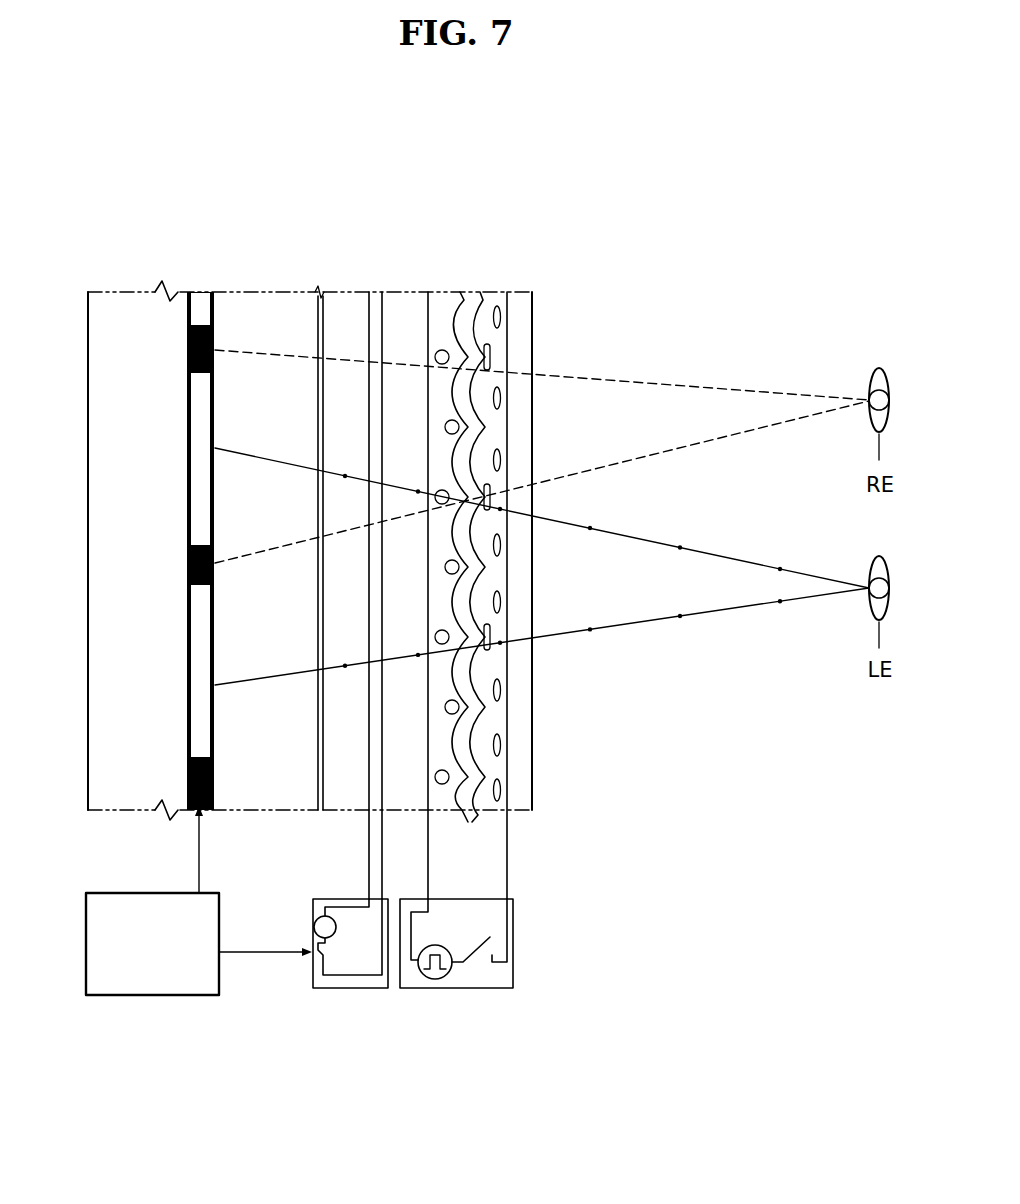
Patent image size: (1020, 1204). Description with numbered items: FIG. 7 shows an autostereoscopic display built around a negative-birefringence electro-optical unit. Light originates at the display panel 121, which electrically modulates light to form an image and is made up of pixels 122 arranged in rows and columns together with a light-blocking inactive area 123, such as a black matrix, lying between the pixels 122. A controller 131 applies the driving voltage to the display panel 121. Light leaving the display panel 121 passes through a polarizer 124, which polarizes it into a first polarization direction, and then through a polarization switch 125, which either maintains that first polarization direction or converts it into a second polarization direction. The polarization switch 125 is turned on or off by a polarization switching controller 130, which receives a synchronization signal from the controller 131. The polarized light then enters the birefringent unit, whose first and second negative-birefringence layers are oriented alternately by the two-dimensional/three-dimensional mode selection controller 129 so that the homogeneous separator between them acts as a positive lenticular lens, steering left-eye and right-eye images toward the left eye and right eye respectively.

The display panel 121 is at (80, 276).
The pixels 122 is at (198, 726).
The inactive area 123 is at (190, 778).
The polarizer 124 is at (320, 292).
The polarization switch 125 is at (372, 292).
The 2D-3D mode selection controller 129 is at (457, 990).
The polarization switching controller 130 is at (350, 990).
The controller 131 is at (153, 997).